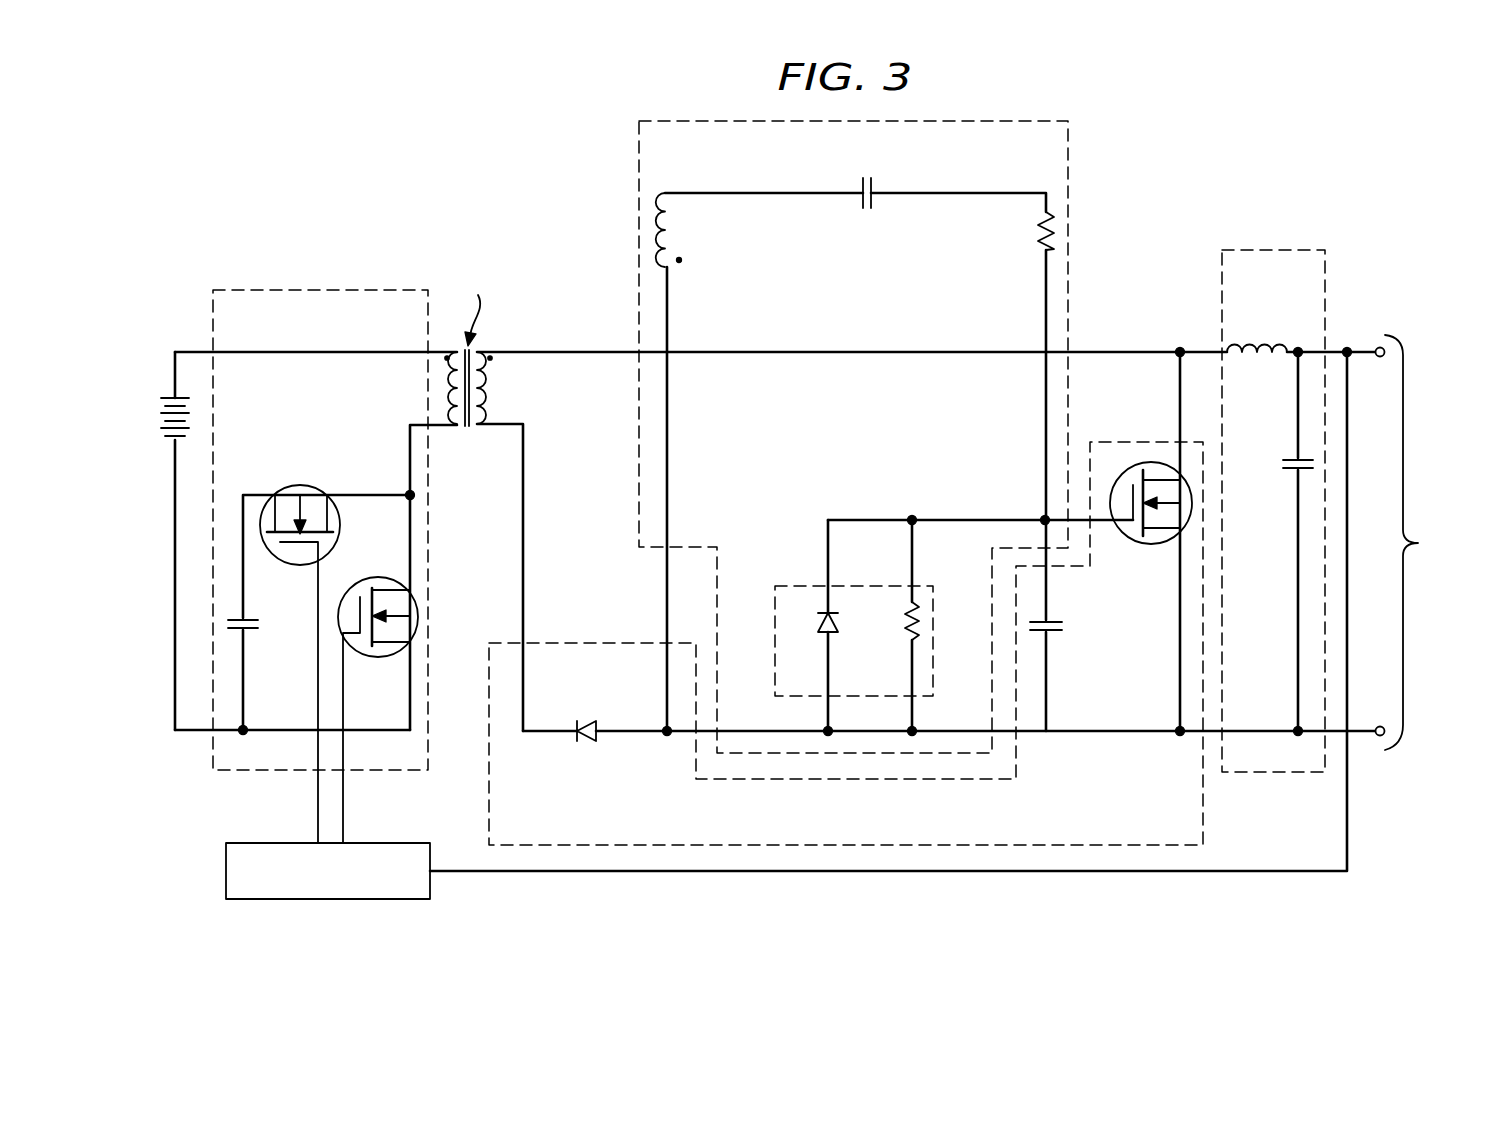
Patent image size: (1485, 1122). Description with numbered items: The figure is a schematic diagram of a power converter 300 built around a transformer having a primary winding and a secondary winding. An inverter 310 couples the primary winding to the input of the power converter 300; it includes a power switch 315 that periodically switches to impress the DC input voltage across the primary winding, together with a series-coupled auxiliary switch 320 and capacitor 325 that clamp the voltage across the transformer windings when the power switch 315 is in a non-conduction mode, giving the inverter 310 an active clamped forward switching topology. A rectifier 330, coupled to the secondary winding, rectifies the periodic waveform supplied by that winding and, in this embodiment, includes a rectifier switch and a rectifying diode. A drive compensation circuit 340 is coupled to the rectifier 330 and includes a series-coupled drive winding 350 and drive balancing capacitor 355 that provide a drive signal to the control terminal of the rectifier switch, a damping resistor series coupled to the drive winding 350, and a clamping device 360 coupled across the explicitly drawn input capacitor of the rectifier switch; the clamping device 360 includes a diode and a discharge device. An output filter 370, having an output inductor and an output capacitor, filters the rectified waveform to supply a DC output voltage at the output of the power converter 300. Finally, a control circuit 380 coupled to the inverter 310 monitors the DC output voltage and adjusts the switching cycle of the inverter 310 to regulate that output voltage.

The power converter 300 is at (490, 192).
The inverter 310 is at (328, 290).
The power switch 315 is at (380, 578).
The auxiliary switch 320 is at (303, 486).
The capacitor 325 is at (253, 634).
The rectifier 330 is at (1203, 815).
The drive compensation circuit 340 is at (1070, 152).
The drive winding 350 is at (678, 233).
The drive balancing capacitor 355 is at (859, 205).
The clamping device 360 is at (798, 585).
The output filter 370 is at (1222, 297).
The control circuit 380 is at (226, 871).